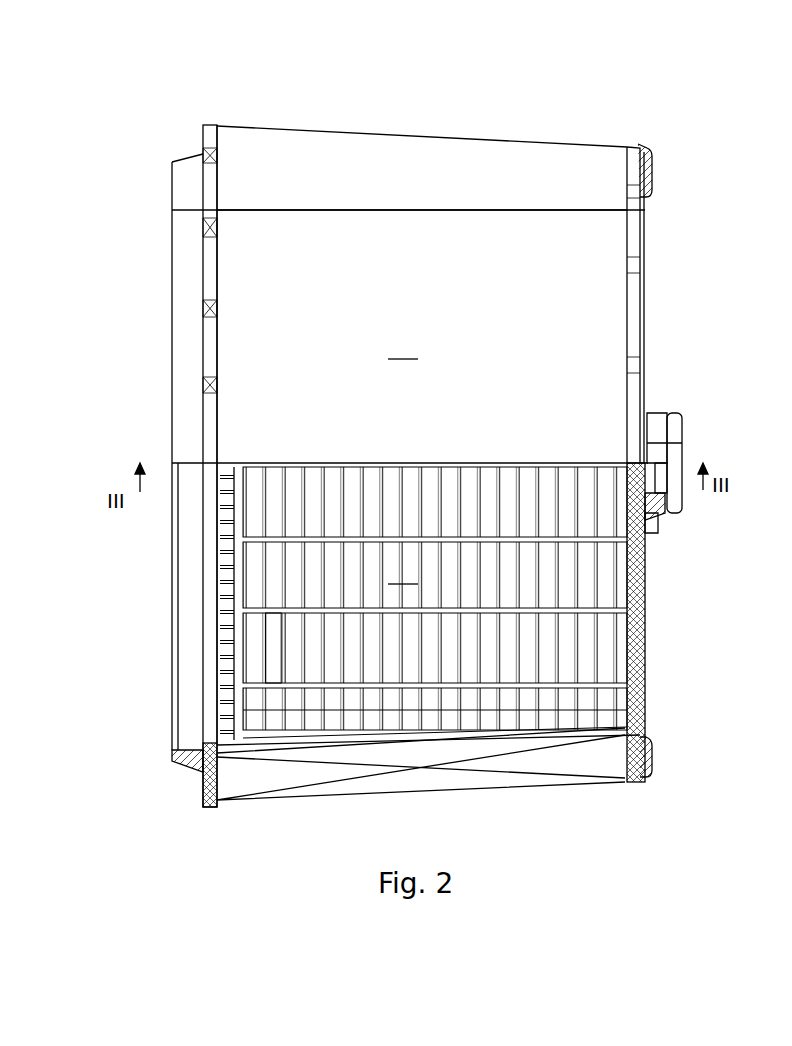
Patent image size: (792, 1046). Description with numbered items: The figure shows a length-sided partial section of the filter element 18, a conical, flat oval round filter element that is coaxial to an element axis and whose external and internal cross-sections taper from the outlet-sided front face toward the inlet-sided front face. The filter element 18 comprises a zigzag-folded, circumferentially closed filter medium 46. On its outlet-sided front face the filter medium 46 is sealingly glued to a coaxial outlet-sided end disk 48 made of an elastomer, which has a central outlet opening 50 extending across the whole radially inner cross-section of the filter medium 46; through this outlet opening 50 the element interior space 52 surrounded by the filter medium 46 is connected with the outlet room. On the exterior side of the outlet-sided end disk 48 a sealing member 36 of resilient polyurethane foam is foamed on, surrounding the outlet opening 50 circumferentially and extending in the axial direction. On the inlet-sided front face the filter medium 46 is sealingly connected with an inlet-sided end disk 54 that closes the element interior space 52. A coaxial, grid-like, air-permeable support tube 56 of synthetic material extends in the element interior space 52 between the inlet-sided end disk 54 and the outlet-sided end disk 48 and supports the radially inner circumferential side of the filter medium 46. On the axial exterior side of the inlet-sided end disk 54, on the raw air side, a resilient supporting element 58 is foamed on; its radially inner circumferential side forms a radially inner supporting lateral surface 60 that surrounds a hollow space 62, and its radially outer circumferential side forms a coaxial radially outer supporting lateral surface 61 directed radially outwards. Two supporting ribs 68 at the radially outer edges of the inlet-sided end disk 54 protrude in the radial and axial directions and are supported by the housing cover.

The filter element 18 is at (118, 122).
The sealing member 36 is at (178, 300).
The filter medium 46 is at (422, 294).
The outlet-sided end disk 48 is at (212, 137).
The outlet opening 50 is at (188, 620).
The element interior space 52 is at (422, 434).
The inlet-sided end disk 54 is at (634, 165).
The support tube 56 is at (280, 650).
The supporting element 58 is at (658, 508).
The radially inner supporting lateral surface 60 is at (662, 490).
The radially outer supporting lateral surface 61 is at (663, 420).
The hollow space 62 is at (670, 478).
The supporting ribs 68 is at (652, 178).